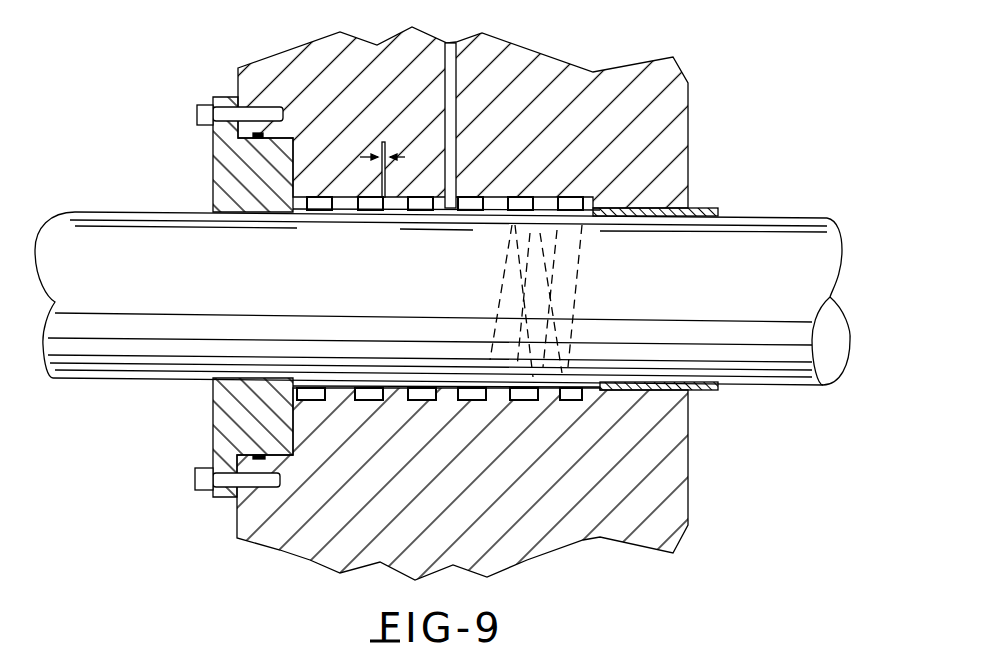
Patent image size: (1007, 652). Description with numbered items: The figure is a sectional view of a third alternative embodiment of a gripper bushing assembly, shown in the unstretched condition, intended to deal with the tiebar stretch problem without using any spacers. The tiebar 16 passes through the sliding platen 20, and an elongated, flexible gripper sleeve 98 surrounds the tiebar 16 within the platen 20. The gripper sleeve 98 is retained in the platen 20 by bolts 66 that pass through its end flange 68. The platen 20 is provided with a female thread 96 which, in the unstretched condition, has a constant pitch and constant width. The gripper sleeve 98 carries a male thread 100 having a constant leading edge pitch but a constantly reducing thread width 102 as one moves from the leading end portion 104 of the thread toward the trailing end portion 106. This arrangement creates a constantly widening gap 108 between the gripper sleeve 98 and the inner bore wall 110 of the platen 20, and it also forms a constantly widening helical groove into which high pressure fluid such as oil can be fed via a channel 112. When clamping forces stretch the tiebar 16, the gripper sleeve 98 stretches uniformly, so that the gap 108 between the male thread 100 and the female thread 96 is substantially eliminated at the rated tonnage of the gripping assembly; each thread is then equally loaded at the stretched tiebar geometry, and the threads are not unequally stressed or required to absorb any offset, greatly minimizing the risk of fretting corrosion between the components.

The tiebar 16 is at (205, 308).
The sliding platen 20 is at (667, 112).
The bolts 66 is at (197, 108).
The end flange 68 is at (230, 156).
The female thread 96 is at (577, 207).
The gripper sleeve 98 is at (717, 212).
The male thread 100 is at (657, 180).
The thread width 102 is at (373, 200).
The leading end portion 104 is at (575, 393).
The trailing end portion 106 is at (346, 378).
The gap 108 is at (383, 140).
The inner bore wall 110 is at (427, 193).
The channel 112 is at (458, 75).